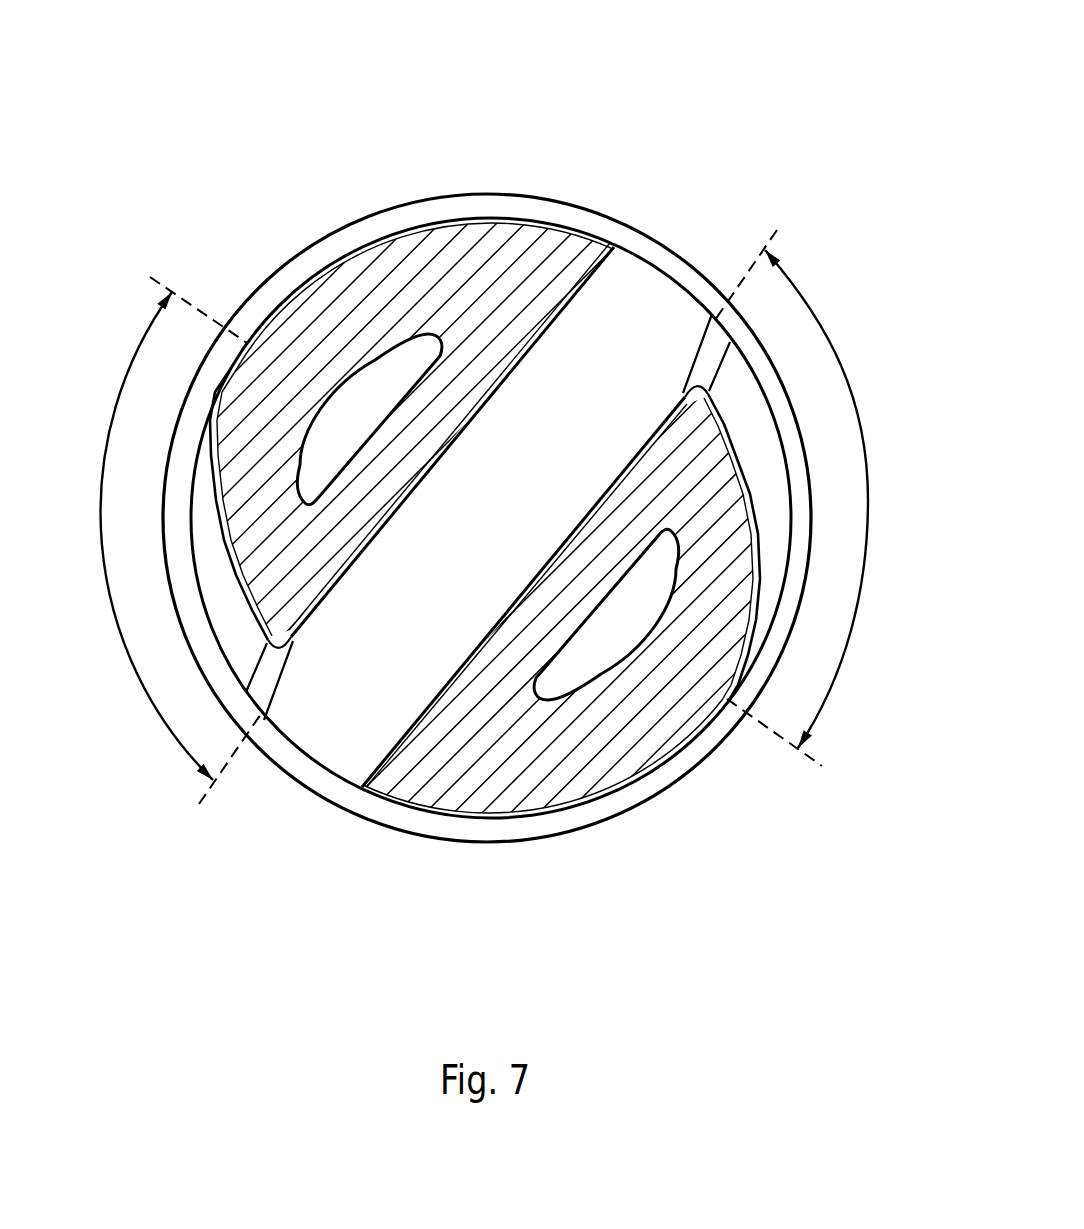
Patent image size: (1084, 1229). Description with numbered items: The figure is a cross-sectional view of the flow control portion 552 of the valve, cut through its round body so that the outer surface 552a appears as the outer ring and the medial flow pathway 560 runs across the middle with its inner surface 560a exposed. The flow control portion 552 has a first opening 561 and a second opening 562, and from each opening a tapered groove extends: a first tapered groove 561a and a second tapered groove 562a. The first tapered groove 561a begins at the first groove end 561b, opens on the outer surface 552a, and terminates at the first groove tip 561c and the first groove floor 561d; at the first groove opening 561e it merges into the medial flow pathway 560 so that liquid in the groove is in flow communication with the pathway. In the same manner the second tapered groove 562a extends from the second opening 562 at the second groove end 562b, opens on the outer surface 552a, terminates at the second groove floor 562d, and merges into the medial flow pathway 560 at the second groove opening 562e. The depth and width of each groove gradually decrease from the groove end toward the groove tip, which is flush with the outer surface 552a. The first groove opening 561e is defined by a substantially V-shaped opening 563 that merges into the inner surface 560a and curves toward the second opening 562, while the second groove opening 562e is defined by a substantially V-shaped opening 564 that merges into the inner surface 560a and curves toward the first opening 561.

The flow control portion 552 is at (643, 84).
The outer surface 552a is at (633, 793).
The medial flow pathway 560 is at (528, 471).
The inner surface 560a is at (510, 512).
The first opening 561 is at (667, 263).
The first tapered groove 561a is at (808, 298).
The first groove end 561b is at (740, 282).
The first groove tip 561c is at (187, 302).
The first groove floor 561d is at (758, 520).
The first groove opening 561e is at (688, 392).
The second opening 562 is at (342, 786).
The second tapered groove 562a is at (162, 726).
The second groove end 562b is at (232, 768).
The second groove floor 562d is at (216, 512).
The second groove opening 562e is at (283, 647).
The V-shaped opening 563 is at (584, 348).
The V-shaped opening 564 is at (296, 695).